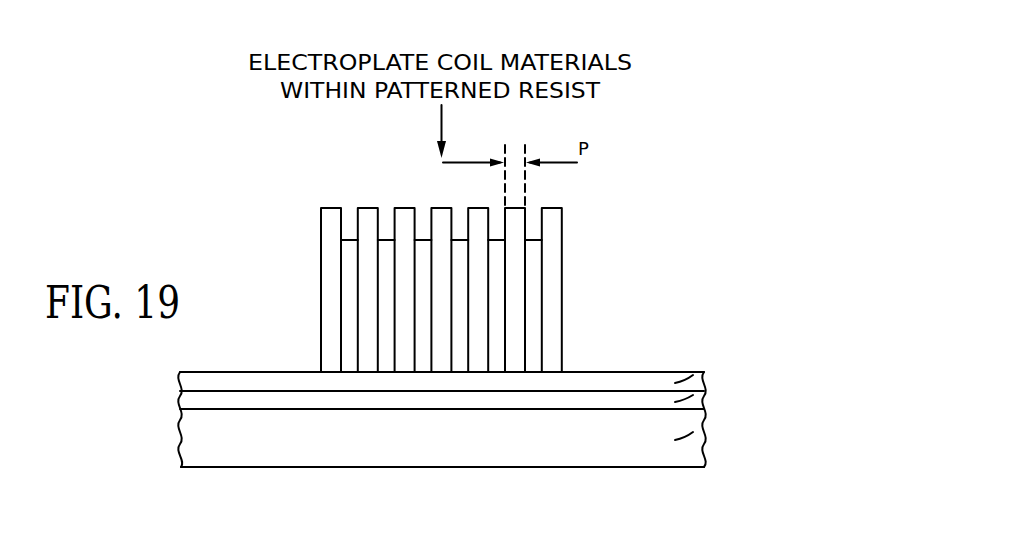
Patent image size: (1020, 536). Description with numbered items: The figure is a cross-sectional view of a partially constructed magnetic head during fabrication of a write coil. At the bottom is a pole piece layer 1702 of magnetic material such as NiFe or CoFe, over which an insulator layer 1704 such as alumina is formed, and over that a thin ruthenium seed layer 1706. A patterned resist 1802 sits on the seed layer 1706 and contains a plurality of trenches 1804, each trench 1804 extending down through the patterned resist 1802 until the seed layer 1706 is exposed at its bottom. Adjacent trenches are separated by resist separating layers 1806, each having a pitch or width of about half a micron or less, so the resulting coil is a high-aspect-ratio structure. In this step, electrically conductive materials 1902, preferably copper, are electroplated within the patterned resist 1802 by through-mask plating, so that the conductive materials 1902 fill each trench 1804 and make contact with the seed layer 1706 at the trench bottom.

The pole piece layer 1702 is at (702, 428).
The insulator layer 1704 is at (702, 390).
The seed layer 1706 is at (702, 372).
The patterned resist 1802 is at (489, 243).
The trench 1804 is at (350, 230).
The resist separating layer 1806 is at (372, 222).
The electrically conductive materials 1902 is at (534, 327).